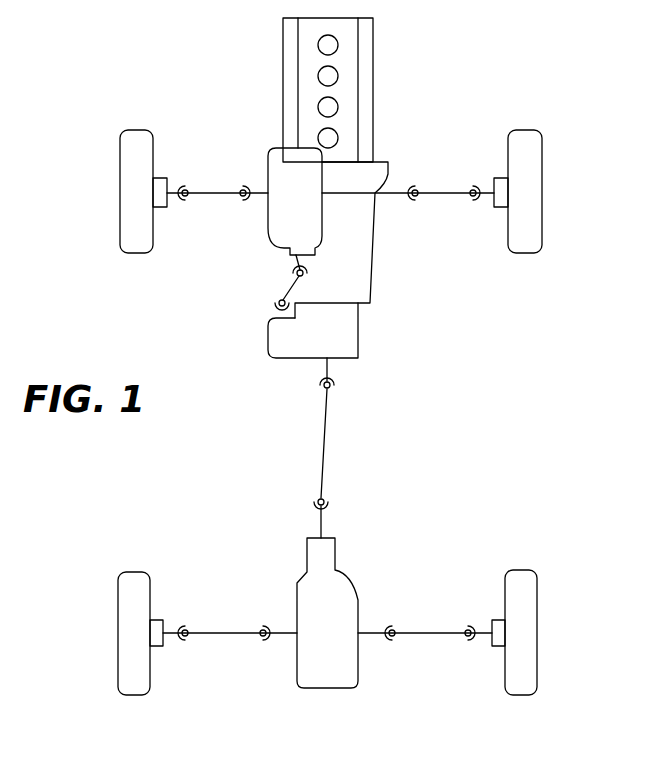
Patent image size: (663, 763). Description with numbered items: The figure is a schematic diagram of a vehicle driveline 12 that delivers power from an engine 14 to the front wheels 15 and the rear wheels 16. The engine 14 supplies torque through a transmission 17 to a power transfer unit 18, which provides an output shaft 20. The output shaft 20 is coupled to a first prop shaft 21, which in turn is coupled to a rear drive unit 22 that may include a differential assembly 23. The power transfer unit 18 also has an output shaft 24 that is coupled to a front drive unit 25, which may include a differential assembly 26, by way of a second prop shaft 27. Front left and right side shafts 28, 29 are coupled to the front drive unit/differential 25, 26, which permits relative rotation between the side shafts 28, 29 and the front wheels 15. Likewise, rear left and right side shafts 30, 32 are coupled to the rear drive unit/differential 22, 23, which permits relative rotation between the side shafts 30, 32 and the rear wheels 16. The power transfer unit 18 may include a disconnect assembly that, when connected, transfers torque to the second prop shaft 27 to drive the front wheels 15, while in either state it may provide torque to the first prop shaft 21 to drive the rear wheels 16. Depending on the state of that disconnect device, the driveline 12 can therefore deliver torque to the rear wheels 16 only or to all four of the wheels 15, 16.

The vehicle driveline 12 is at (440, 386).
The engine 14 is at (373, 50).
The front wheels 15 is at (140, 130).
The rear wheels 16 is at (135, 572).
The transmission 17 is at (373, 235).
The power transfer unit 18 is at (360, 335).
The output shaft 20 is at (330, 372).
The first prop shaft 21 is at (328, 425).
The rear drive unit 22 is at (359, 639).
The differential assembly 23 is at (325, 688).
The output shaft 24 is at (275, 309).
The front drive unit 25 is at (249, 201).
The differential assembly 26 is at (268, 226).
The second prop shaft 27 is at (290, 294).
The front left side shaft 28 is at (217, 190).
The front right side shaft 29 is at (445, 190).
The rear left side shaft 30 is at (227, 630).
The rear right side shaft 32 is at (433, 630).